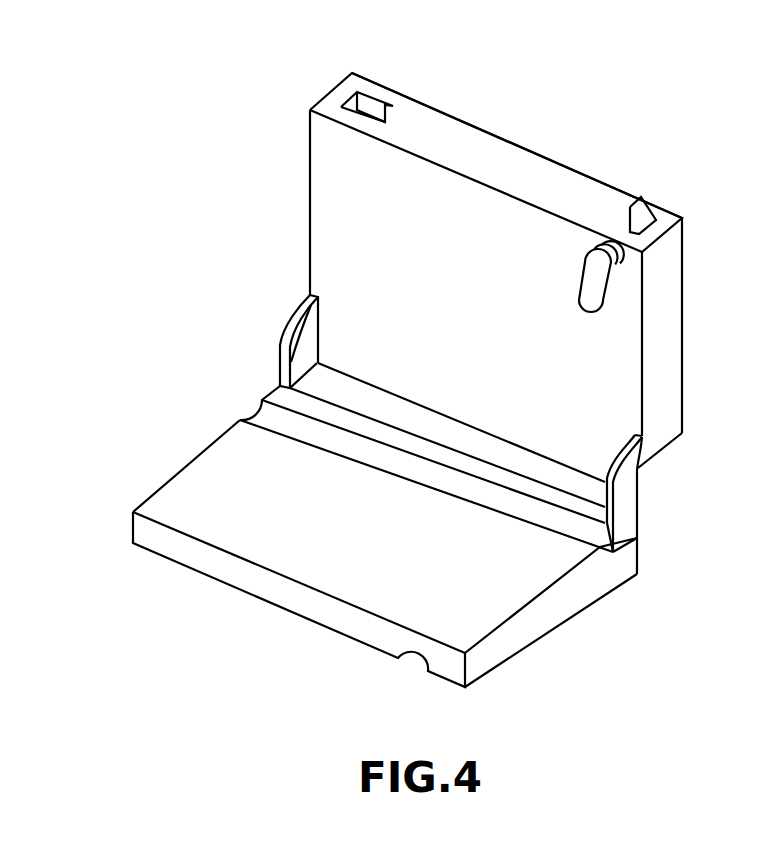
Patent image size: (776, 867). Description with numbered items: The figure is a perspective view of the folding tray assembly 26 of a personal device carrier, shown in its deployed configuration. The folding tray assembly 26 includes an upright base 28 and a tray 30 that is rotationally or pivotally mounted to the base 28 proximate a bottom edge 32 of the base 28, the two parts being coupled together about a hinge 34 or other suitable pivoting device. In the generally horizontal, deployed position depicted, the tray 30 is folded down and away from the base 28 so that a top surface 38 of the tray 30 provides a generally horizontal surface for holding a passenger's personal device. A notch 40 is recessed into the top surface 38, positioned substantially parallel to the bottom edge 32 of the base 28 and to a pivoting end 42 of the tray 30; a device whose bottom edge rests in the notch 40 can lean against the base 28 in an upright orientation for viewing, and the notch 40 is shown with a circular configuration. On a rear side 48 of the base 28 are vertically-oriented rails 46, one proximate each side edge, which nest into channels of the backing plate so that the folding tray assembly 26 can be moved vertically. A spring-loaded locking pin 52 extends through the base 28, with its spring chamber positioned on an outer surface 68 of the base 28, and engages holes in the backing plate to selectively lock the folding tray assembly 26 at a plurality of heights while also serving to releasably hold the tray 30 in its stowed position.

The folding tray assembly 26 is at (266, 215).
The upright base 28 is at (412, 173).
The tray 30 is at (477, 618).
The bottom edge 32 is at (600, 540).
The hinge 34 is at (302, 342).
The top surface 38 is at (239, 520).
The notch 40 is at (612, 547).
The pivoting end 42 is at (362, 428).
The vertically-oriented rail 46 is at (371, 93).
The rear side 48 is at (531, 183).
The spring-loaded locking pin 52 is at (588, 264).
The outer surface 68 is at (503, 407).